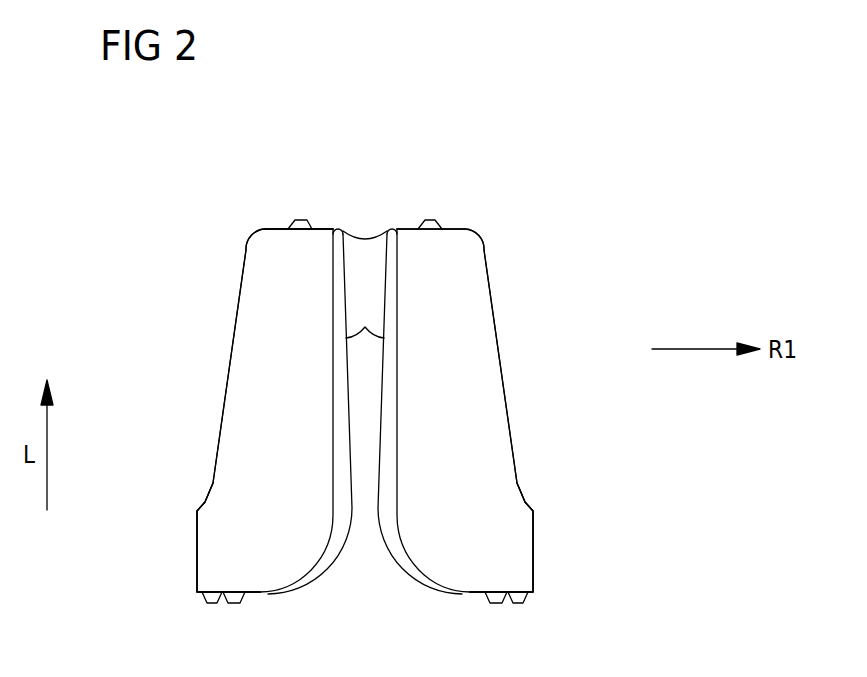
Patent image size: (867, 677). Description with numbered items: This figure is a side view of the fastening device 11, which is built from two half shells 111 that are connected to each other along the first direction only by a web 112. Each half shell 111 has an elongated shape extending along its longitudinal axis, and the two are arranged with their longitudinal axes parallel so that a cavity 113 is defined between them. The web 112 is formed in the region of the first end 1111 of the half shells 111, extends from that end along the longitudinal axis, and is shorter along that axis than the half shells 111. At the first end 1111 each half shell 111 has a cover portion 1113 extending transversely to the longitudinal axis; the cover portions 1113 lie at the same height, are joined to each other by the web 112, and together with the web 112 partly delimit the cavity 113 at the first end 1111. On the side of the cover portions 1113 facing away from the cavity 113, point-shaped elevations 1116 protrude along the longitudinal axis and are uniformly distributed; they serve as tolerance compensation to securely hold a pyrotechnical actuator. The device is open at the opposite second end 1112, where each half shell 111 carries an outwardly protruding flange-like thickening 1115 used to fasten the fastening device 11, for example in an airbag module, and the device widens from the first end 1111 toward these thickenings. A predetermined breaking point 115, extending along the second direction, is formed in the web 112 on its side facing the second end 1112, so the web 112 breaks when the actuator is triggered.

The fastening device 11 is at (540, 172).
The half shells 111 is at (245, 443).
The first end 1111 is at (263, 228).
The second end 1112 is at (203, 595).
The cover portion 1113 is at (322, 228).
The flange-like thickening 1115 is at (197, 552).
The elevations 1116 is at (295, 219).
The web 112 is at (352, 263).
The cavity 113 is at (360, 413).
The predetermined breaking point 115 is at (255, 359).